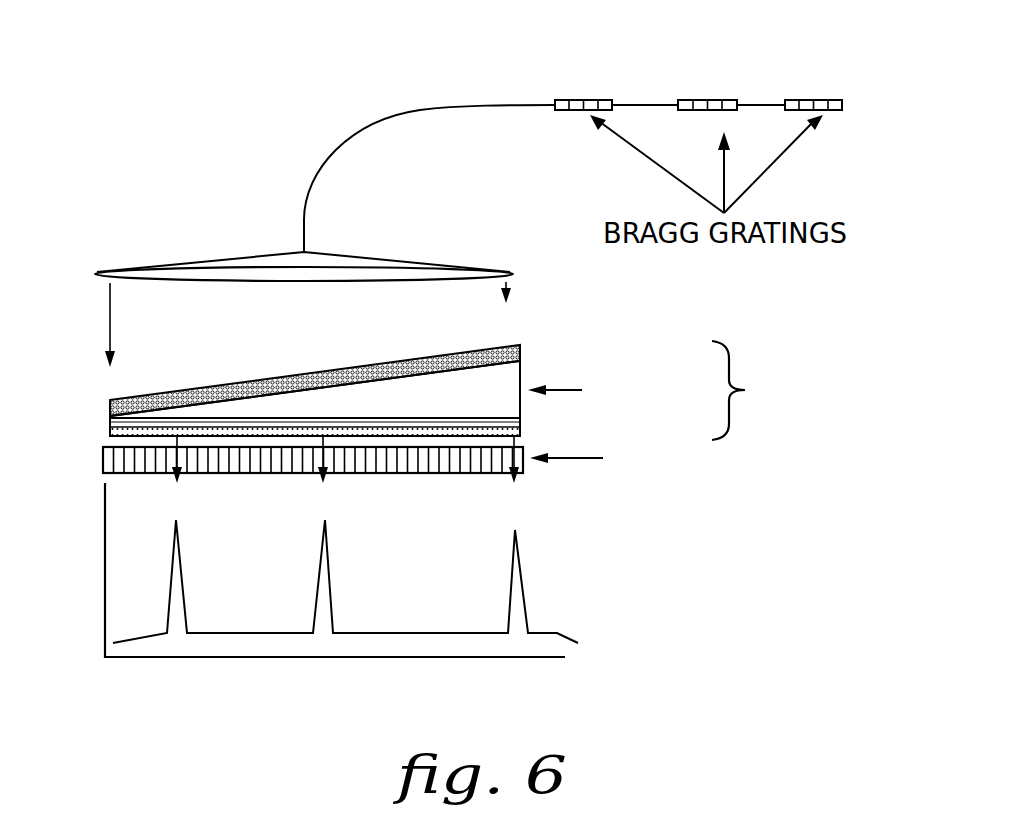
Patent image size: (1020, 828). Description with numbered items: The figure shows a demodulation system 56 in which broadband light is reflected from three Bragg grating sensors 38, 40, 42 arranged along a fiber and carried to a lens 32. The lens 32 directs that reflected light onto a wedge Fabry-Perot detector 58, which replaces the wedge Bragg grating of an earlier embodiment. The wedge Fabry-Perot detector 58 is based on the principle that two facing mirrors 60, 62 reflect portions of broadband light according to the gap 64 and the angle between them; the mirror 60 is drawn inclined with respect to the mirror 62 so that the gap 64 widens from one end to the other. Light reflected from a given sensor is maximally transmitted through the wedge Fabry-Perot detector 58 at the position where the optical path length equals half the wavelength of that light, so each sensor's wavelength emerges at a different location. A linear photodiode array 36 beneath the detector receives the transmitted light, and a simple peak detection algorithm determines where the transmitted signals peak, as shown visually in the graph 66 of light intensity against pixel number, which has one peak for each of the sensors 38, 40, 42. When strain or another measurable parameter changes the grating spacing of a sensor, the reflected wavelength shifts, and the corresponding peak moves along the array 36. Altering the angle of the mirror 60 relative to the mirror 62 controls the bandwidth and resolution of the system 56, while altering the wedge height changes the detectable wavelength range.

The demodulation system 56 is at (222, 82).
The sensor 38 is at (601, 100).
The sensor 40 is at (728, 100).
The sensor 42 is at (833, 100).
The lens 32 is at (450, 268).
The wedge Fabry-Perot detector 58 is at (450, 376).
The mirror 60 is at (437, 357).
The gap 64 is at (486, 404).
The mirror 62 is at (522, 426).
The linear photodiode array 36 is at (523, 473).
The graph 66 is at (620, 586).